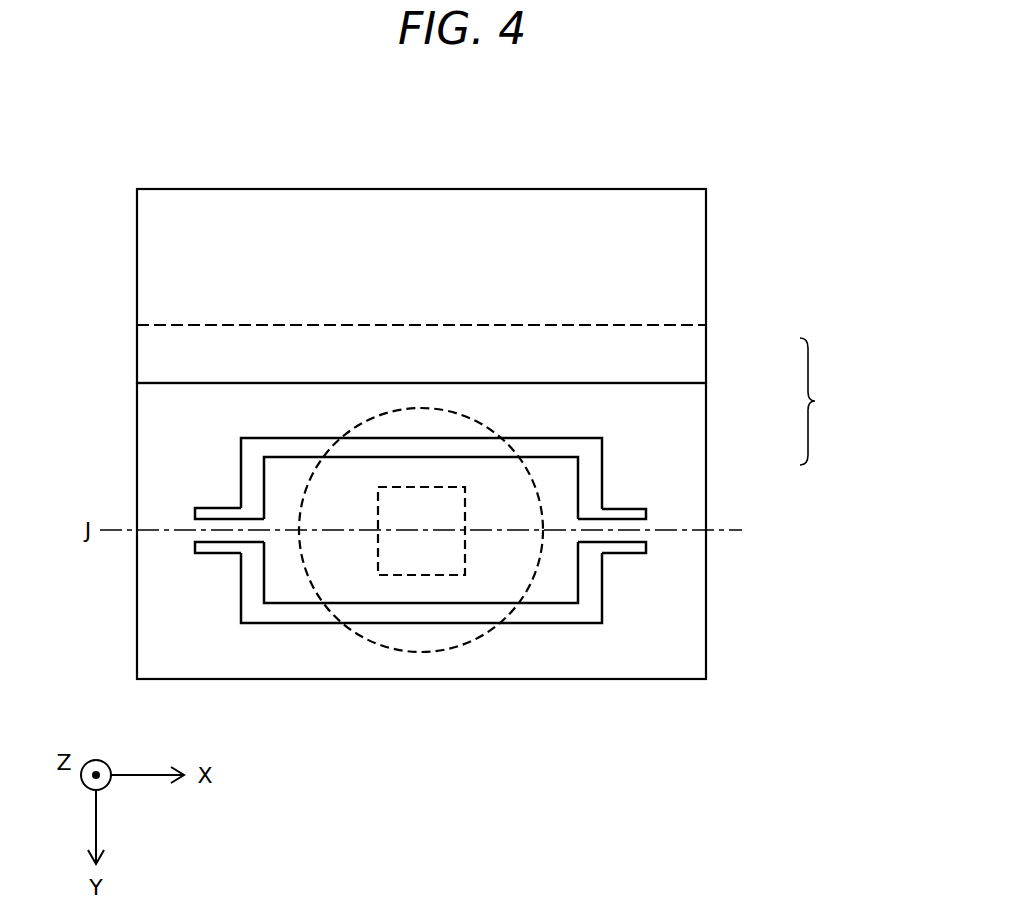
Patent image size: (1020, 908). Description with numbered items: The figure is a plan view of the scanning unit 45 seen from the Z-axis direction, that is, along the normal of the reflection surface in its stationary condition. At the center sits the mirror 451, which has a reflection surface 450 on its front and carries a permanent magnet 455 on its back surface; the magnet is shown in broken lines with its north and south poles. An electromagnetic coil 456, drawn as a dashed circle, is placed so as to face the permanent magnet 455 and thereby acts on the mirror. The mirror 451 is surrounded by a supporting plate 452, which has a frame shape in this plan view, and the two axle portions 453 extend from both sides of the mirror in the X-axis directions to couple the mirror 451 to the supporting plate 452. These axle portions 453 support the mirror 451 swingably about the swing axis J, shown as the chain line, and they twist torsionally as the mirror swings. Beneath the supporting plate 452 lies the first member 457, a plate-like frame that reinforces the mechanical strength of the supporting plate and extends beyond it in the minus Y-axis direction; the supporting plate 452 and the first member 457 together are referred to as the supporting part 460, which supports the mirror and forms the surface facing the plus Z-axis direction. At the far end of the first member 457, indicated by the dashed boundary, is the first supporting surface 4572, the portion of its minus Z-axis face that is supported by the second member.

The scanning unit 45 is at (475, 403).
The first supporting surface 4572 is at (680, 263).
The first member 457 is at (678, 357).
The supporting plate 452 is at (676, 447).
The supporting part 460 is at (835, 401).
The reflection surface 450 is at (547, 583).
The mirror 451 is at (282, 585).
The axle portions 453 is at (205, 532).
The permanent magnet 455 is at (391, 575).
The electromagnetic coil 456 is at (447, 653).